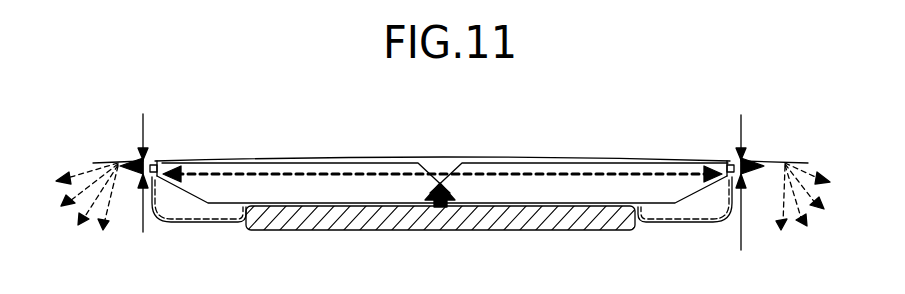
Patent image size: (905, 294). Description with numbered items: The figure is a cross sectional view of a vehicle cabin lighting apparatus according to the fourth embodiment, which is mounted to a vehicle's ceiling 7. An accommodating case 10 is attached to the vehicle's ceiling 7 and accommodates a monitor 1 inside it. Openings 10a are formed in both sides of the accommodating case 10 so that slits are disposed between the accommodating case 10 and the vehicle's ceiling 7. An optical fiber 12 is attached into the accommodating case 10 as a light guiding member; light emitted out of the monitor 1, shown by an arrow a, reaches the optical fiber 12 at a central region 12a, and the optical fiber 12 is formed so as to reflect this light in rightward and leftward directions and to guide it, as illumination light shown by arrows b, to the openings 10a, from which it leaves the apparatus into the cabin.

The monitor 1 is at (389, 231).
The vehicle's ceiling 7 is at (401, 158).
The accommodating case 10 is at (200, 223).
The openings 10a is at (158, 162).
The optical fiber 12 is at (548, 189).
The light incident portion 12a is at (452, 166).
The arrow a is at (452, 194).
The arrows b is at (569, 172).